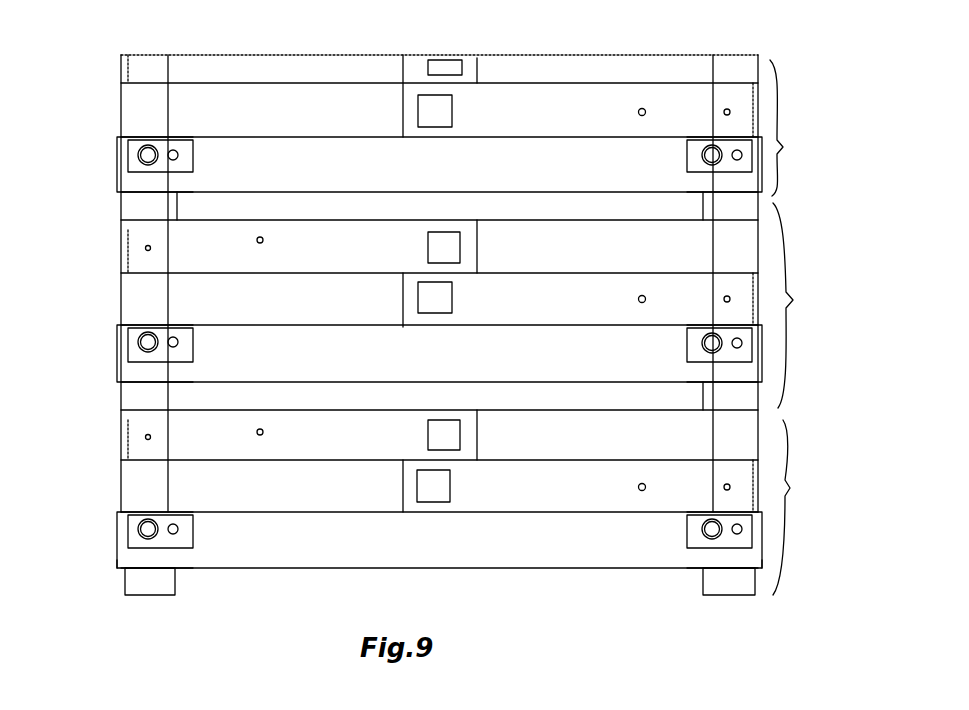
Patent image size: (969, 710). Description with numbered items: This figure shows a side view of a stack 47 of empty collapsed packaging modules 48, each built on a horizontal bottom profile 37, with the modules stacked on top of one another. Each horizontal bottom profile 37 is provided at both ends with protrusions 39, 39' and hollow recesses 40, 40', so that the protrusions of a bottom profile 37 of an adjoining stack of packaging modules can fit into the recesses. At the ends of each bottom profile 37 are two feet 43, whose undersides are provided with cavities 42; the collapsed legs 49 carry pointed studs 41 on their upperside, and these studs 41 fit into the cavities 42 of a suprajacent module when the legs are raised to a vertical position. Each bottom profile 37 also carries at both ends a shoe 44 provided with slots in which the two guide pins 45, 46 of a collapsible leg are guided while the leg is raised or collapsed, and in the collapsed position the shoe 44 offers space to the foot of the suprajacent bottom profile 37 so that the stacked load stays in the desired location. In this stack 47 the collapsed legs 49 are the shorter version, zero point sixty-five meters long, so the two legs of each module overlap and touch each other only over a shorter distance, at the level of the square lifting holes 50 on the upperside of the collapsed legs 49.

The horizontal bottom profile 37 is at (560, 343).
The protrusion 39 is at (121, 369).
The protrusion 39' is at (778, 344).
The hollow recess 40 is at (127, 348).
The hollow recess 40' is at (773, 363).
The pointed stud 41 is at (413, 280).
The cavity 42 is at (157, 590).
The foot 43 is at (118, 584).
The shoe 44 is at (147, 290).
The guide pin 45 is at (145, 248).
The guide pin 46 is at (262, 237).
The stack 47 is at (830, 36).
The packaging module 48 is at (801, 327).
The collapsed leg 49 is at (326, 240).
The square lifting hole 50 is at (437, 108).